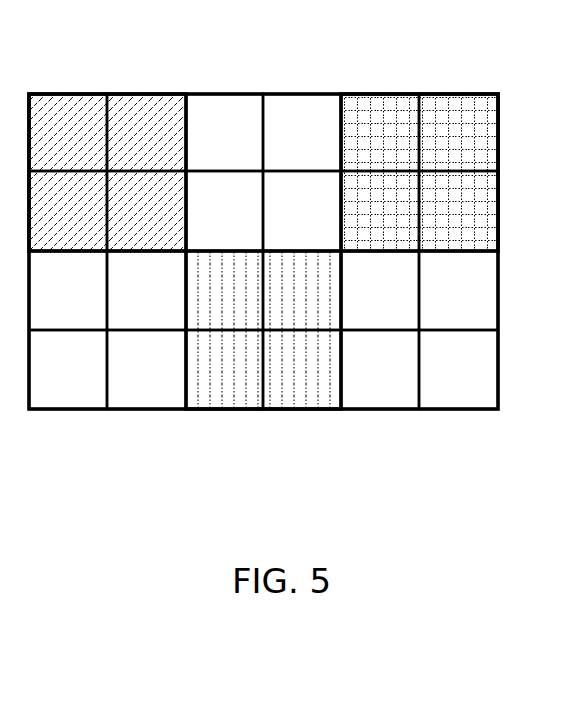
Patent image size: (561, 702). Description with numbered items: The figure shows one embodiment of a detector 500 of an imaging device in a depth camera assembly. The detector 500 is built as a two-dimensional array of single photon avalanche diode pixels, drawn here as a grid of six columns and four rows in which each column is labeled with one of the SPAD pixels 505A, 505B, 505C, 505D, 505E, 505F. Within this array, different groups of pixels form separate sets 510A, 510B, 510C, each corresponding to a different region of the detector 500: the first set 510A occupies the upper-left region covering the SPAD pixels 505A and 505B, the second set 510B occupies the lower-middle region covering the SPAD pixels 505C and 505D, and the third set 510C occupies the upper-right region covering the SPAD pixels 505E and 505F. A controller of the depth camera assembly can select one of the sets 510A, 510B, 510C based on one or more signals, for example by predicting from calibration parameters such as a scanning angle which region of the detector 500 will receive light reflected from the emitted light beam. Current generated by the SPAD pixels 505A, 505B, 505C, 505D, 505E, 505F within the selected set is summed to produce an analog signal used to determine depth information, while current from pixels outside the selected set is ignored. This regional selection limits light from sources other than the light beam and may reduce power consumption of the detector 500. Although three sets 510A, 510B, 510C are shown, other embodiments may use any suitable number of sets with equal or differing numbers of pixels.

The detector 500 is at (280, 245).
The SPAD pixel 505A is at (40, 146).
The SPAD pixel 505B is at (118, 146).
The SPAD pixel 505C is at (196, 146).
The SPAD pixel 505D is at (274, 146).
The SPAD pixel 505E is at (352, 146).
The SPAD pixel 505F is at (431, 146).
The set of SPAD pixels 510A is at (107, 171).
The set of SPAD pixels 510B is at (265, 332).
The set of SPAD pixels 510C is at (419, 171).